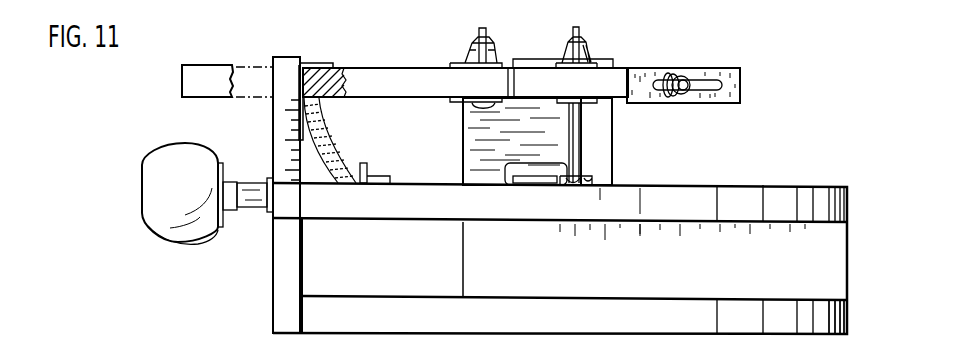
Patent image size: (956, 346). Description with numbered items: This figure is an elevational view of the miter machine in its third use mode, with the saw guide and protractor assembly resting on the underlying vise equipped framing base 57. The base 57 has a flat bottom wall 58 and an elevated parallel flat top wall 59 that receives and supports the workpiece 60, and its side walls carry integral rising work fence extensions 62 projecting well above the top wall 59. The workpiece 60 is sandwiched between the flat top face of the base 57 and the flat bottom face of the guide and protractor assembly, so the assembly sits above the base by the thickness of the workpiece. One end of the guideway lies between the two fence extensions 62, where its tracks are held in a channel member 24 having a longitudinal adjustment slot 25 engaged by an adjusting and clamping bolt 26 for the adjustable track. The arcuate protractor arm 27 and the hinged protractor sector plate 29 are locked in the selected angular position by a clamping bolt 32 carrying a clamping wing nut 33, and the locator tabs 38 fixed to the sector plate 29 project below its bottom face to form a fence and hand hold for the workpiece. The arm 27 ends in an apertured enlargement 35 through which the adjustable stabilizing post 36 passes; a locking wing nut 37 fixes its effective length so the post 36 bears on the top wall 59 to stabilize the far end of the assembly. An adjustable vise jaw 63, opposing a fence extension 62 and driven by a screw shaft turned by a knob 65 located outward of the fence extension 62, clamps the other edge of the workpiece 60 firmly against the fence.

The channel member 24 is at (733, 96).
The longitudinal adjustment slot 25 is at (715, 80).
The adjusting and clamping bolt 26 is at (687, 80).
The arcuate protractor arm 27 is at (205, 65).
The protractor sector plate 29 is at (330, 70).
The clamping bolt 32 is at (490, 46).
The clamping wing nut 33 is at (467, 52).
The enlargement 35 is at (602, 78).
The adjustable support or stabilizing post 36 is at (573, 120).
The locking wing nut 37 is at (583, 50).
The locator tab 38 is at (292, 125).
The framing or miter machine base 57 is at (782, 185).
The flat bottom wall 58 is at (845, 325).
The flat top wall 59 is at (730, 186).
The workpiece 60 is at (335, 141).
The work fence extension 62 is at (283, 57).
The adjustable jaw 63 is at (370, 170).
The turning knob 65 is at (192, 222).